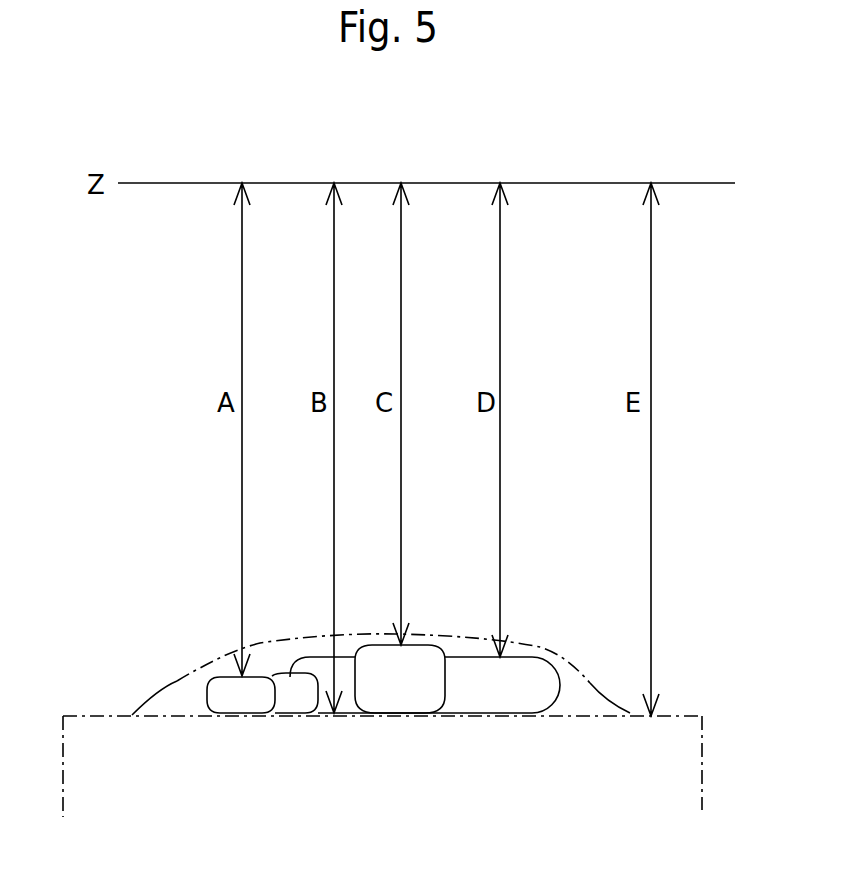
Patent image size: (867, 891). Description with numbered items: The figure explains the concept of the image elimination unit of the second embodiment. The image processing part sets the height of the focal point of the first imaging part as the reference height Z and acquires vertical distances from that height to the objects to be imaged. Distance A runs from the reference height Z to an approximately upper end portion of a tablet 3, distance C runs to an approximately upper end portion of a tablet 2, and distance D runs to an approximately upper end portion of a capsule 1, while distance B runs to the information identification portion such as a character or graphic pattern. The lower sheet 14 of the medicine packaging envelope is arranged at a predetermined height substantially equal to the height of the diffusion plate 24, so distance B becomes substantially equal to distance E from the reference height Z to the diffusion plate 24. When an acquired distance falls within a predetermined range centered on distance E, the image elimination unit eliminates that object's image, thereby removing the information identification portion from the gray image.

The capsule 1 is at (532, 658).
The tablet 2 is at (422, 653).
The tablet 3 is at (283, 713).
The lower sheet 14 is at (190, 708).
The diffusion plate 24 is at (683, 715).